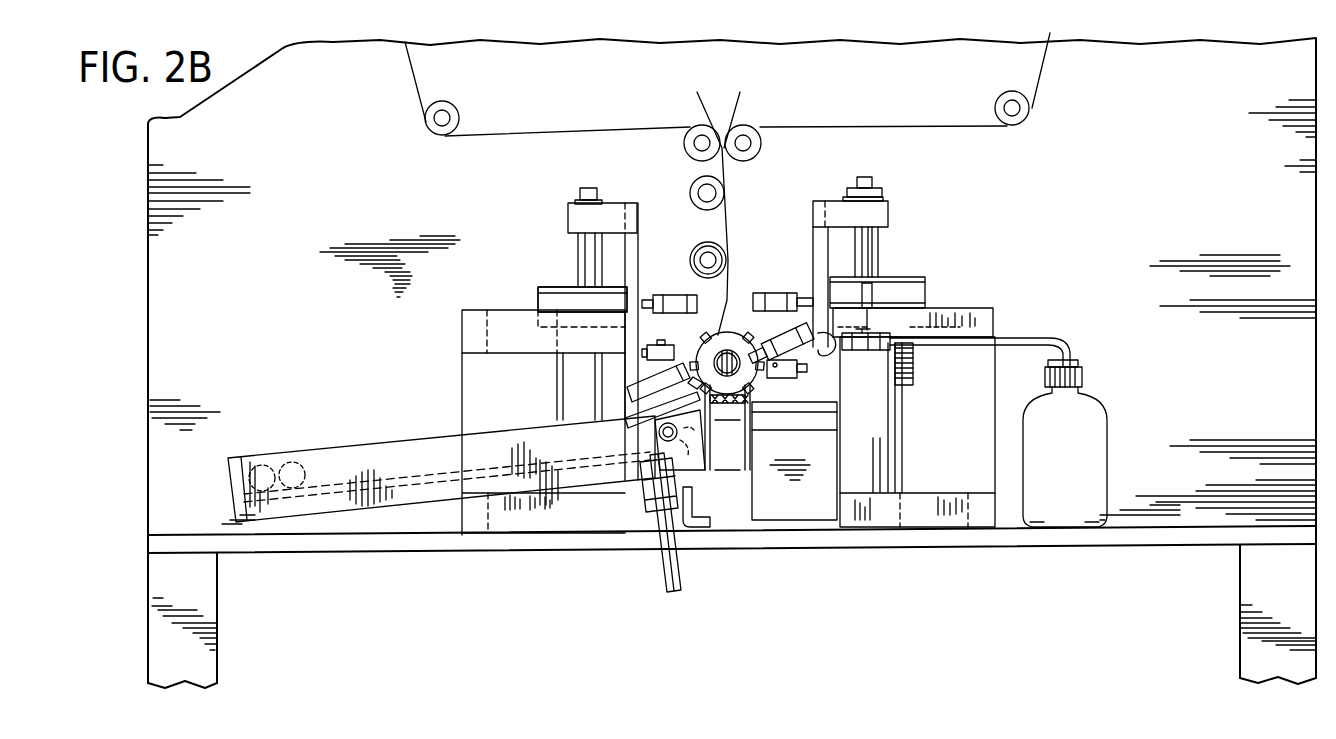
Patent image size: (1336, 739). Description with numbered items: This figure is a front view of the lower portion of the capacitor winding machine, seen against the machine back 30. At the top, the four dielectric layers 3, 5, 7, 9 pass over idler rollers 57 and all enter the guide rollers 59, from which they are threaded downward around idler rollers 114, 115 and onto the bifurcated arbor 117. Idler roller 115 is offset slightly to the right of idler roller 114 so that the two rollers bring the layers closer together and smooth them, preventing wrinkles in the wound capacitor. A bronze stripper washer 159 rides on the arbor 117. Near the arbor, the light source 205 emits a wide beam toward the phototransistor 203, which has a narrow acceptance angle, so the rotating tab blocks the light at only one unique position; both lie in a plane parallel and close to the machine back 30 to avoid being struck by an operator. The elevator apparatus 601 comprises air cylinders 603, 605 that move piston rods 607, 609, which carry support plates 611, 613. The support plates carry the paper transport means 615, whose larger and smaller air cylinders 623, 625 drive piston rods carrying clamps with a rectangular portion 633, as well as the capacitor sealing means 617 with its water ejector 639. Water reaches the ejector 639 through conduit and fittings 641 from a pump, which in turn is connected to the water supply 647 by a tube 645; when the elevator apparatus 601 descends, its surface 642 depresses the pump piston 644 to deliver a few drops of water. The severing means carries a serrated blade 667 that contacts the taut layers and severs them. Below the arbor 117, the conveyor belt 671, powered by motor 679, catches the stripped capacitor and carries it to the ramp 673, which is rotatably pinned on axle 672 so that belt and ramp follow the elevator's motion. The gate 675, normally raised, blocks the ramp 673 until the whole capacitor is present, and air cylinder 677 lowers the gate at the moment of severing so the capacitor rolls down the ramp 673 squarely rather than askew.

The dielectric layer 3 is at (413, 77).
The dielectric layer 5 is at (1043, 62).
The dielectric layer 7 is at (697, 103).
The dielectric layer 9 is at (741, 106).
The machine back 30 is at (288, 298).
The idler rollers 57 is at (425, 128).
The guide rollers 59 is at (684, 145).
The idler roller 114 is at (692, 188).
The idler roller 115 is at (700, 245).
The bifurcated arbor 117 is at (735, 380).
The stripper washer 159 is at (745, 432).
The phototransistor 203 is at (798, 368).
The light source 205 is at (690, 379).
The elevator apparatus 601 is at (888, 348).
The air cylinder 603 is at (880, 472).
The air cylinder 605 is at (553, 383).
The piston rod 607 is at (870, 242).
The piston rod 609 is at (578, 240).
The support plate 611 is at (813, 233).
The support plate 613 is at (638, 255).
The paper transport means 615 is at (535, 295).
The capacitor sealing means 617 is at (915, 370).
The air cylinder 623 is at (920, 305).
The air cylinder 625 is at (562, 285).
The rectangular portion 633 is at (678, 294).
The water ejector 639 is at (782, 340).
The conduit and fittings 641 is at (875, 331).
The surface 642 is at (878, 195).
The piston 644 is at (876, 292).
The tube 645 is at (1017, 337).
The water supply 647 is at (1087, 473).
The serrated blade 667 is at (685, 330).
The conveyor belt 671 is at (742, 408).
The axle 672 is at (700, 530).
The ramp 673 is at (672, 400).
The gate 675 is at (625, 438).
The air cylinder 677 is at (655, 570).
The motor 679 is at (800, 505).